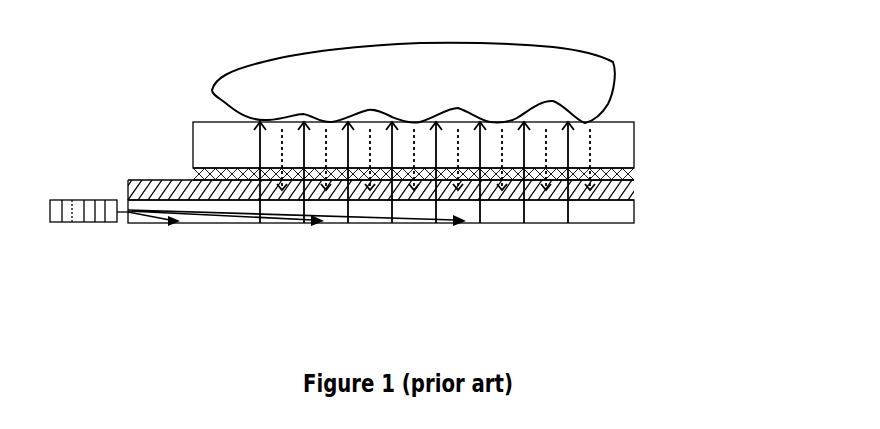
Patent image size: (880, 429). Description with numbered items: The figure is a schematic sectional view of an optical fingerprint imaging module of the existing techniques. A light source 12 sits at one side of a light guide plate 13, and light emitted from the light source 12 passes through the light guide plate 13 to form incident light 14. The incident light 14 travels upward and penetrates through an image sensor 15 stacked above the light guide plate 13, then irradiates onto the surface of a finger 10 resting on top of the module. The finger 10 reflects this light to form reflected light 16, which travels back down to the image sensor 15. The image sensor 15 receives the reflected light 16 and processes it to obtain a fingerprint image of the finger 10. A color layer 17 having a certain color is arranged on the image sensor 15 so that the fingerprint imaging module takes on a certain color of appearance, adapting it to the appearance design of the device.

The finger 10 is at (580, 80).
The light source 12 is at (83, 208).
The light guide plate 13 is at (587, 210).
The incident light 14 is at (436, 201).
The image sensor 15 is at (634, 189).
The reflected light 16 is at (464, 180).
The color layer 17 is at (634, 171).